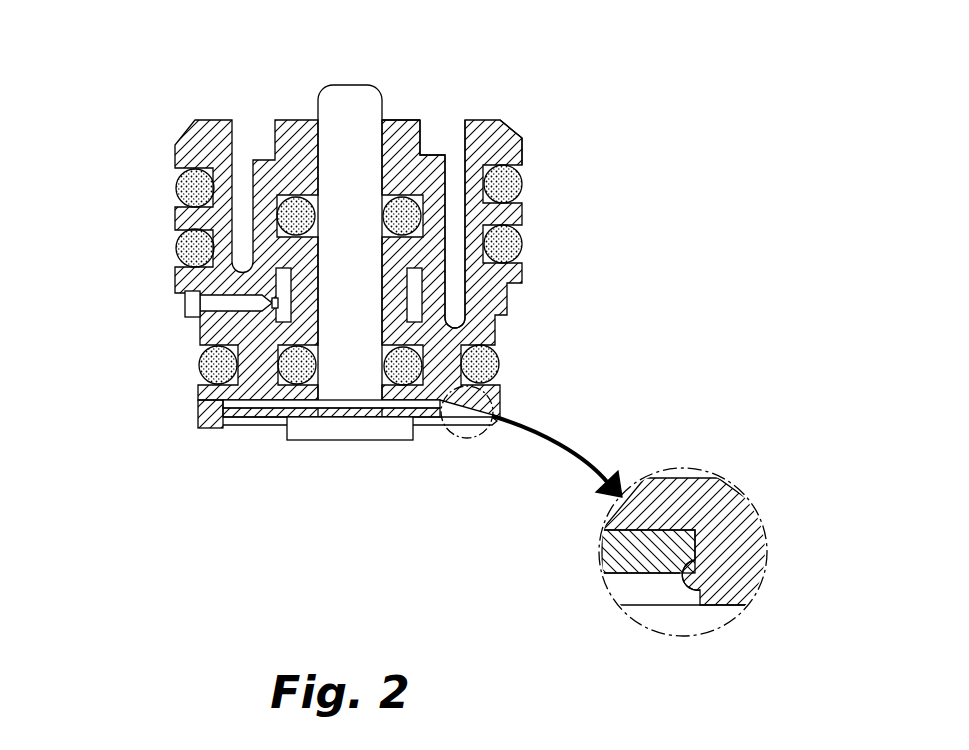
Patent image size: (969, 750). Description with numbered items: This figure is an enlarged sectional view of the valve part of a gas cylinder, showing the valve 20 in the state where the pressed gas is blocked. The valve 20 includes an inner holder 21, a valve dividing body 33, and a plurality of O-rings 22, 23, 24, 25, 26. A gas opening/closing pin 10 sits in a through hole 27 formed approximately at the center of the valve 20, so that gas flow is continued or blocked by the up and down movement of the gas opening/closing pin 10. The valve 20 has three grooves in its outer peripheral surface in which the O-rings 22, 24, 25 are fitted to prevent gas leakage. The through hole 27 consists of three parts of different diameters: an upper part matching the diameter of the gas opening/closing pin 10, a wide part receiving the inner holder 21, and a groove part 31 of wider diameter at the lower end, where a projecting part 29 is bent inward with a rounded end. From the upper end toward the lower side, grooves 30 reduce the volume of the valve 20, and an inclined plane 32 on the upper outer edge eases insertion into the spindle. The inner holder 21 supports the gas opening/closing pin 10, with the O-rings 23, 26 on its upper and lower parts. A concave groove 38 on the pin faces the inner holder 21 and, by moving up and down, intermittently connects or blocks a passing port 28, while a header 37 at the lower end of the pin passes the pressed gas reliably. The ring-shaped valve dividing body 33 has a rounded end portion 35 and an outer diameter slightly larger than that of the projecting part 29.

The gas opening/closing pin 10 is at (342, 103).
The valve 20 is at (505, 297).
The inner holder 21 is at (342, 398).
The O-ring 22 is at (520, 180).
The O-ring 23 is at (423, 213).
The O-ring 24 is at (525, 247).
The O-ring 25 is at (500, 360).
The O-ring 26 is at (382, 400).
The through hole 27 is at (383, 102).
The passing port 28 is at (185, 302).
The projecting part 29 is at (233, 425).
The grooves 30 is at (445, 130).
The groove part 31 is at (200, 410).
The inclined plane 32 is at (510, 128).
The valve dividing body 33 is at (447, 420).
The end portion 35 is at (723, 587).
The header 37 is at (303, 425).
The concave groove 38 is at (323, 400).